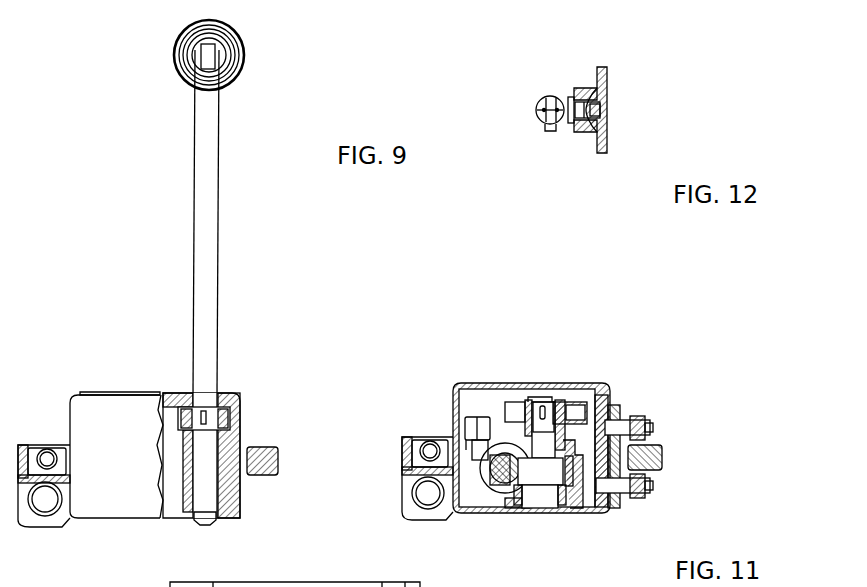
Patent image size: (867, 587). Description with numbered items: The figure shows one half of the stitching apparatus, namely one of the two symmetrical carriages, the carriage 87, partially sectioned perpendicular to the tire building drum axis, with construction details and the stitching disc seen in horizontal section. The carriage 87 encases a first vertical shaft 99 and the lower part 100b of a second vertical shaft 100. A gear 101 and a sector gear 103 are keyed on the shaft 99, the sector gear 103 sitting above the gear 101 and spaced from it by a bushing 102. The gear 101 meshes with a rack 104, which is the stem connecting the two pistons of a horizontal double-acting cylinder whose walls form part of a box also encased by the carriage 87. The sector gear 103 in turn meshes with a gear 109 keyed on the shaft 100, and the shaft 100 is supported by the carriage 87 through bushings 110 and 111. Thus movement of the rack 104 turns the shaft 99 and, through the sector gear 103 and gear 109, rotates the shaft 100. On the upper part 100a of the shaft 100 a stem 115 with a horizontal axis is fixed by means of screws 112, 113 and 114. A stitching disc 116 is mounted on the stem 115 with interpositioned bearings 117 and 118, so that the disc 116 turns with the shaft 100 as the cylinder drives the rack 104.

In FIG. 9, the carriage 87 is at (72, 398).
In FIG. 11, the carriage 87 is at (606, 390).
In FIG. 11, the first vertical shaft 99 is at (547, 503).
In FIG. 9, the second vertical shaft 100 is at (232, 239).
In FIG. 9, the upper part of shaft 100a is at (220, 150).
In FIG. 9, the lower part of shaft 100b is at (208, 485).
In FIG. 11, the gear 101 is at (532, 475).
In FIG. 11, the bushing 102 is at (515, 420).
In FIG. 11, the sector gear 103 is at (565, 400).
In FIG. 11, the rack 104 is at (495, 500).
In FIG. 9, the gear 109 is at (234, 393).
In FIG. 9, the bushing 110 is at (192, 518).
In FIG. 9, the bushing 111 is at (191, 398).
In FIG. 12, the screw 112 is at (547, 131).
In FIG. 12, the screw 113 is at (540, 100).
In FIG. 12, the screw 114 is at (553, 96).
In FIG. 12, the stem 115 is at (582, 88).
In FIG. 9, the stitching disc 116 is at (243, 44).
In FIG. 12, the stitching disc 116 is at (600, 132).
In FIG. 12, the bearing 117 is at (576, 123).
In FIG. 12, the bearing 118 is at (600, 93).